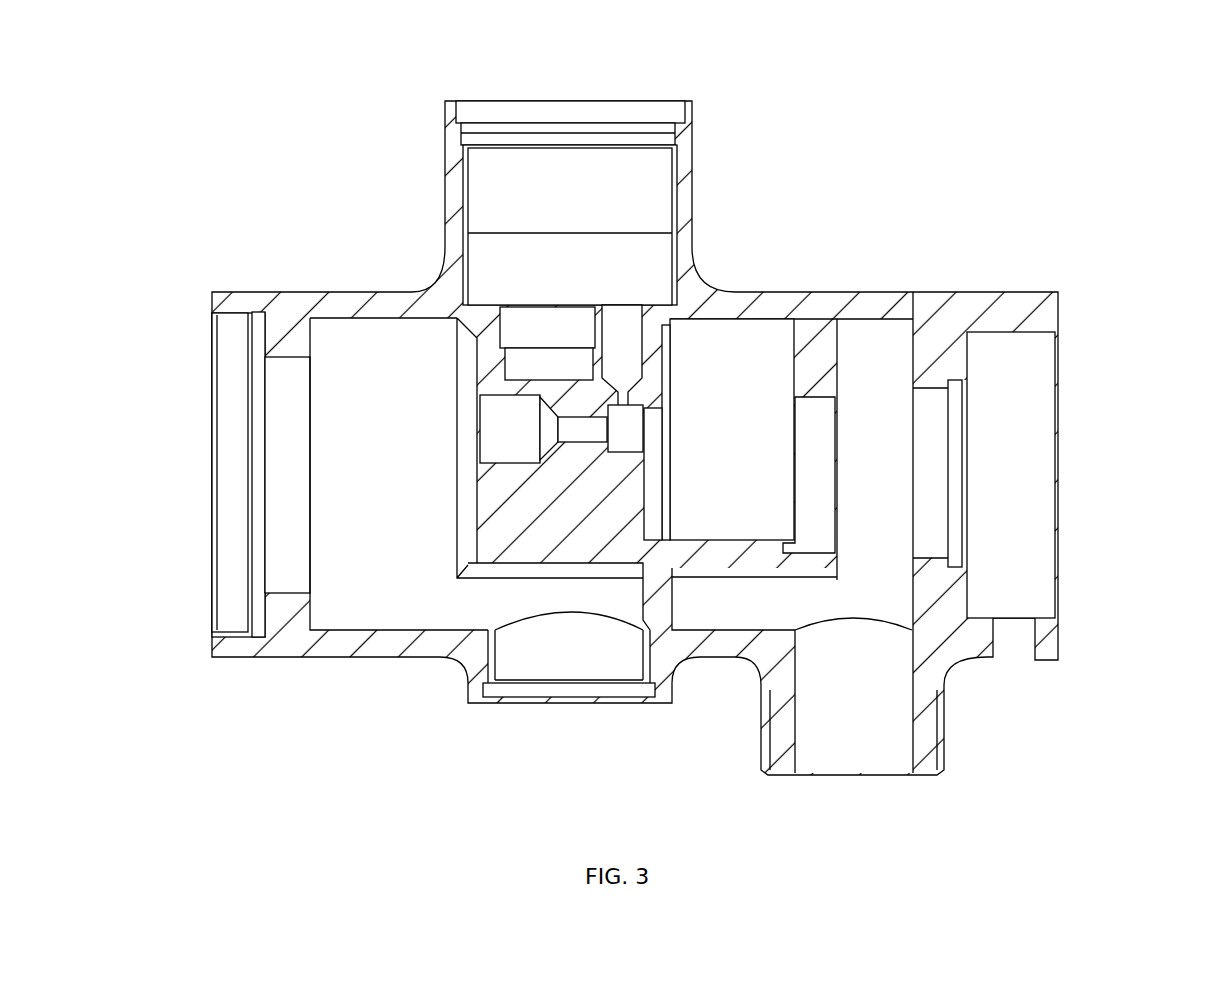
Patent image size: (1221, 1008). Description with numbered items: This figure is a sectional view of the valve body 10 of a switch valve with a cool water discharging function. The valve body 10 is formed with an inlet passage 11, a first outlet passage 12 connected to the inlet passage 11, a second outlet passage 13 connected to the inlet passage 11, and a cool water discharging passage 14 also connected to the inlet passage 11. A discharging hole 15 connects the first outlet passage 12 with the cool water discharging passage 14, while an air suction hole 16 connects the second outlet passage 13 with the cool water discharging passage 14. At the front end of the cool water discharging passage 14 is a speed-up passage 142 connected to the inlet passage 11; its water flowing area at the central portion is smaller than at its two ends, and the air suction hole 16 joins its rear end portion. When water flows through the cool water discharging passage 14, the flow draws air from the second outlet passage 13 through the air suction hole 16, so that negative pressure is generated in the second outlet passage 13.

The valve body 10 is at (450, 293).
The inlet passage 11 is at (560, 593).
The first outlet passage 12 is at (867, 672).
The second outlet passage 13 is at (567, 250).
The cool water discharging passage 14 is at (733, 465).
The speed-up passage 142 is at (574, 430).
The discharging hole 15 is at (875, 572).
The air suction hole 16 is at (622, 385).